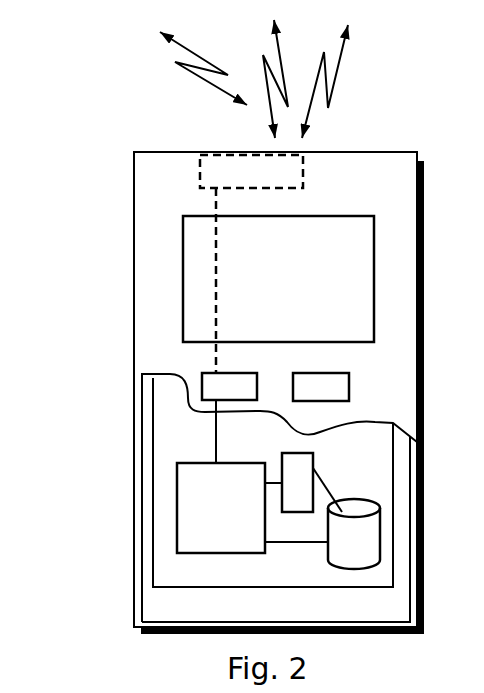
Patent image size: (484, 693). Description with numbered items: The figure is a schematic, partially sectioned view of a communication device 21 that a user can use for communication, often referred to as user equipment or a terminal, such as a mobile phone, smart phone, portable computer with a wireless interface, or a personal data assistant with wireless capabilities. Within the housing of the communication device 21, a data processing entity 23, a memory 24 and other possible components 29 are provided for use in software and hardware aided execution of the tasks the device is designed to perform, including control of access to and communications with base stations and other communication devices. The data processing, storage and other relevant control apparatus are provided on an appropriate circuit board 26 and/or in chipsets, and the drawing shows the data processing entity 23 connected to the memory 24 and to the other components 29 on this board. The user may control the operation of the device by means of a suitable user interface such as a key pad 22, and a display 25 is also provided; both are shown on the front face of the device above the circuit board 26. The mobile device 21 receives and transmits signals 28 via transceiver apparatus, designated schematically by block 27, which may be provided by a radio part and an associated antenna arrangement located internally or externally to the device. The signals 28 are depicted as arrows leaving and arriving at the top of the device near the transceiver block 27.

The communication device 21 is at (134, 191).
The key pad 22 is at (207, 388).
The data processing entity 23 is at (183, 492).
The memory 24 is at (348, 547).
The display 25 is at (200, 266).
The circuit board 26 is at (177, 572).
The transceiver apparatus 27 is at (218, 152).
The signals 28 is at (352, 93).
The other components 29 is at (297, 468).